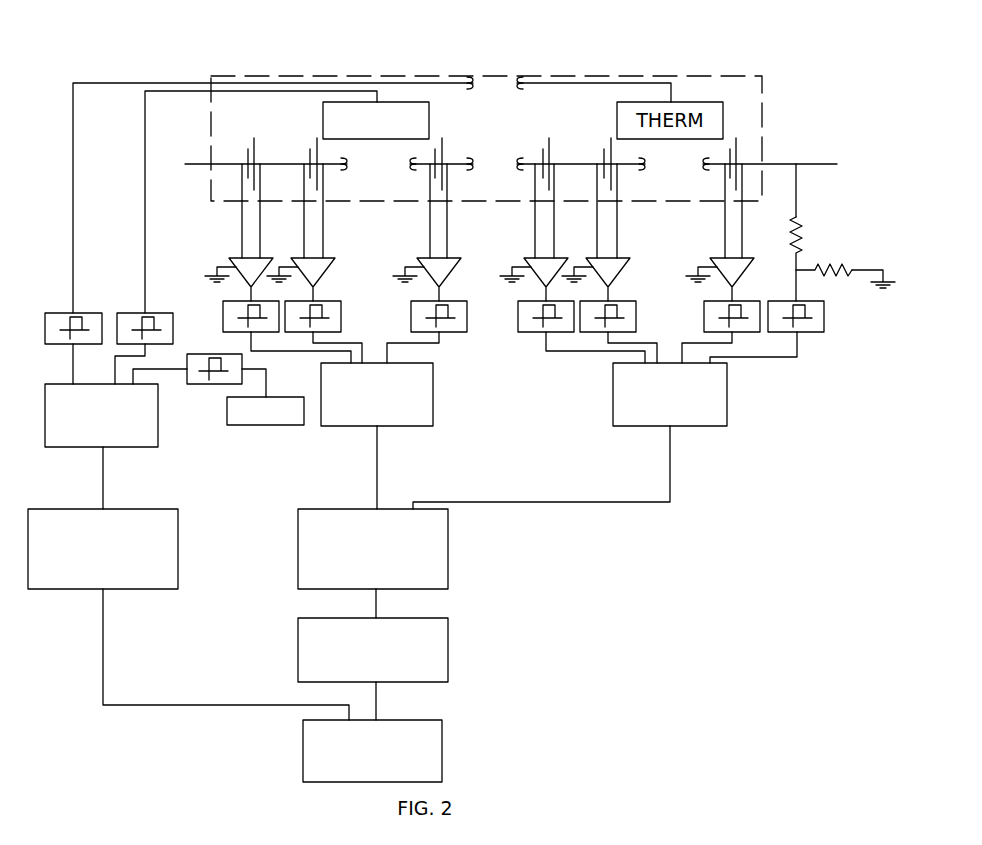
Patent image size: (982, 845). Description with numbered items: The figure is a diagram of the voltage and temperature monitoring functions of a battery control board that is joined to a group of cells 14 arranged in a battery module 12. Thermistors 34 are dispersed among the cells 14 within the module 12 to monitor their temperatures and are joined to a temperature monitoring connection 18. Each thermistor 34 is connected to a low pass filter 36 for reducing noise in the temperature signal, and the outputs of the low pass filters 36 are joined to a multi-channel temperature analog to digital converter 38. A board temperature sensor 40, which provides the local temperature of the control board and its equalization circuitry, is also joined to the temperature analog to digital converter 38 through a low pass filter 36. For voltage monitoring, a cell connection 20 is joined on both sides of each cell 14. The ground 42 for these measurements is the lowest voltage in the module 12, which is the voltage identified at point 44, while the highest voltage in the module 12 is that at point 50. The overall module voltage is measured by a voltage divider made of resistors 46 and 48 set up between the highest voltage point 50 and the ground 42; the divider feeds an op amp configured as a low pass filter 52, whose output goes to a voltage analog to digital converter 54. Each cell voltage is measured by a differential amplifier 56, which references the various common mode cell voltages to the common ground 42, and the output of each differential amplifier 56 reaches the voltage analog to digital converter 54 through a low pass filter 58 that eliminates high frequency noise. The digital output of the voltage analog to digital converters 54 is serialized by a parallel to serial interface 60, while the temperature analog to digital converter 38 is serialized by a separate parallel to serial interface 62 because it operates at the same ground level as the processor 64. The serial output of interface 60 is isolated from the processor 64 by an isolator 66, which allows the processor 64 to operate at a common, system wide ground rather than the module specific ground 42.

The battery module 12 is at (747, 76).
The cell 14 is at (553, 150).
The temperature monitoring connection 18 is at (127, 82).
The cell connection 20 is at (242, 216).
The thermistor 34 is at (410, 102).
The low pass filter 36 is at (130, 313).
The temperature analog to digital converter 38 is at (73, 447).
The board temperature sensor 40 is at (268, 425).
The ground 42 is at (207, 284).
The lowest voltage point 44 is at (208, 160).
The resistor 46 is at (798, 232).
The resistor 48 is at (830, 272).
The highest voltage point 50 is at (786, 163).
The low pass filter 52 is at (802, 332).
The voltage analog to digital converter 54 is at (410, 426).
The differential amplifier 56 is at (457, 267).
The low pass filter 58 is at (463, 332).
The parallel to serial interface 60 is at (448, 547).
The parallel to serial interface 62 is at (178, 547).
The processor 64 is at (442, 745).
The isolator 66 is at (448, 645).